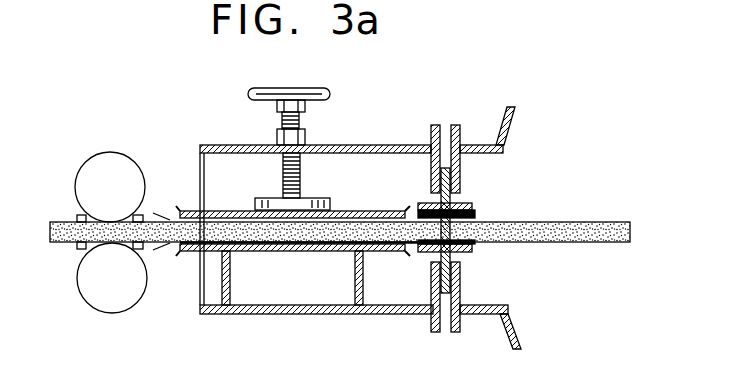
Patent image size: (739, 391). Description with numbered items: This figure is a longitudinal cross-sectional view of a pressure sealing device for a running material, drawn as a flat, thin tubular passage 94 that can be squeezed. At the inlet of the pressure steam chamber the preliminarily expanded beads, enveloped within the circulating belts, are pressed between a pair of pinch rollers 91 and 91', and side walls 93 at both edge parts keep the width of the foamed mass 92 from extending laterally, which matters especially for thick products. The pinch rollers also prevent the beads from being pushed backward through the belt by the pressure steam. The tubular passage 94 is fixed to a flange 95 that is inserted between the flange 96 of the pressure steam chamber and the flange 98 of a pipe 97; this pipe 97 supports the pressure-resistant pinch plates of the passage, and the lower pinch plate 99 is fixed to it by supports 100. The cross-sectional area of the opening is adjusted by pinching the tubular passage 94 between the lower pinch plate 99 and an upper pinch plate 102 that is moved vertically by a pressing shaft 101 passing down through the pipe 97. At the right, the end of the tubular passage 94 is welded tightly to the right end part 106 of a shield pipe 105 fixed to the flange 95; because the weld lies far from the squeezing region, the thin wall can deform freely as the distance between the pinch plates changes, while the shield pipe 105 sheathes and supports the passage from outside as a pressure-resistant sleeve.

The pinch roller 91 is at (126, 290).
The pinch roller 91' is at (127, 176).
The foamed mass 92 is at (60, 243).
The side walls 93 is at (76, 221).
The tubular passage 94 is at (167, 215).
The flange 95 is at (441, 168).
The flange of the pressure steam chamber 96 is at (462, 135).
The pipe 97 is at (352, 144).
The flange of pipe 98 is at (431, 134).
The lower pinch plate 99 is at (295, 250).
The supports 100 is at (230, 290).
The pressing shaft 101 is at (283, 188).
The pressure plate 102 is at (365, 210).
The shield pipe 105 is at (467, 203).
The right end part of shield pipe 106 is at (474, 213).